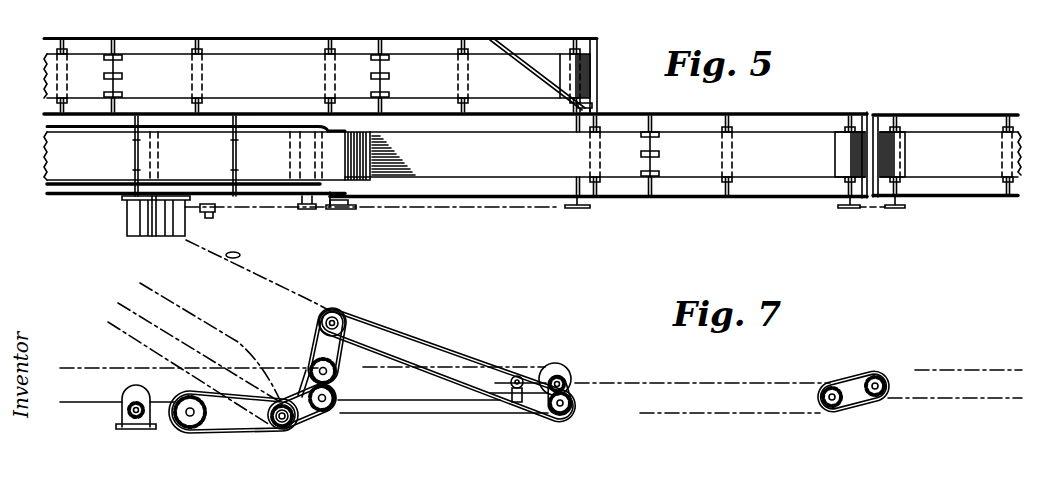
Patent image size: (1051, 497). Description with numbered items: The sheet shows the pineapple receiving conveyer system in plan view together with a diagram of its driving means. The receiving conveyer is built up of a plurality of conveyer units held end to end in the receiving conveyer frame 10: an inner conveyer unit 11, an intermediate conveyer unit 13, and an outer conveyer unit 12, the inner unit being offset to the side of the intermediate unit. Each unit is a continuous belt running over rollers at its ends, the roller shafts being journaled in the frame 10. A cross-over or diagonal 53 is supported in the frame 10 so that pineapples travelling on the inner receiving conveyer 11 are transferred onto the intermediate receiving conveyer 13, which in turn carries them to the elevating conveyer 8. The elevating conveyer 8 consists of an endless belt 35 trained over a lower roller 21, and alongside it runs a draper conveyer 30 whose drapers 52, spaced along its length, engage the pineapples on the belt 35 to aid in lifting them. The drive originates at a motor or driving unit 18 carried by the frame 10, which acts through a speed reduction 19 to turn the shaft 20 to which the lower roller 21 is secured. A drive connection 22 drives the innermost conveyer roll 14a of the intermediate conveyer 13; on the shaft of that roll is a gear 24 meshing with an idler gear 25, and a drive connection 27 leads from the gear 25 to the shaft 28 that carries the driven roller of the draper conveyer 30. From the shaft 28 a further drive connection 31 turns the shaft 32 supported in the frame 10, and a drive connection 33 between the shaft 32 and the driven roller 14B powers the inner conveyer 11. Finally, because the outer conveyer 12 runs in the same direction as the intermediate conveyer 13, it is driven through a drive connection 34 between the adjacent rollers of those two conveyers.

In FIG. 5, the elevating conveyer 8 is at (265, 37).
In FIG. 5, the receiving conveyer frame 10 is at (665, 198).
In FIG. 5, the inner conveyer unit 11 is at (430, 60).
In FIG. 7, the inner conveyer unit 11 is at (492, 370).
In FIG. 5, the outer conveyer unit 12 is at (945, 140).
In FIG. 7, the outer conveyer unit 12 is at (926, 372).
In FIG. 5, the intermediate conveyer unit 13 is at (770, 134).
In FIG. 7, the intermediate conveyer unit 13 is at (698, 389).
In FIG. 5, the innermost conveyer roll 14a is at (592, 52).
In FIG. 7, the driven roller 14B is at (567, 370).
In FIG. 5, the motor or driving unit 18 is at (158, 226).
In FIG. 7, the motor or driving unit 18 is at (124, 394).
In FIG. 5, the speed reduction 19 is at (180, 196).
In FIG. 7, the speed reduction 19 is at (188, 394).
In FIG. 5, the shaft 20 is at (306, 210).
In FIG. 7, the shaft 20 is at (285, 408).
In FIG. 7, the lower roller 21 is at (295, 421).
In FIG. 7, the drive connection 22 is at (306, 370).
In FIG. 7, the gear 24 is at (336, 410).
In FIG. 7, the idler gear 25 is at (340, 366).
In FIG. 7, the drive connection 27 is at (316, 345).
In FIG. 7, the shaft 28 is at (345, 318).
In FIG. 5, the draper conveyer 30 is at (100, 170).
In FIG. 7, the draper conveyer 30 is at (286, 290).
In FIG. 5, the drive connection 31 is at (540, 210).
In FIG. 7, the drive connection 31 is at (425, 360).
In FIG. 5, the shaft 32 is at (578, 210).
In FIG. 7, the shaft 32 is at (552, 414).
In FIG. 5, the drive connection 33 is at (592, 108).
In FIG. 7, the drive connection 33 is at (569, 387).
In FIG. 5, the drive connection 34 is at (870, 210).
In FIG. 7, the drive connection 34 is at (848, 385).
In FIG. 7, the endless belt 35 is at (180, 335).
In FIG. 5, the drapers 52 is at (135, 146).
In FIG. 5, the cross-over or diagonal 53 is at (522, 70).